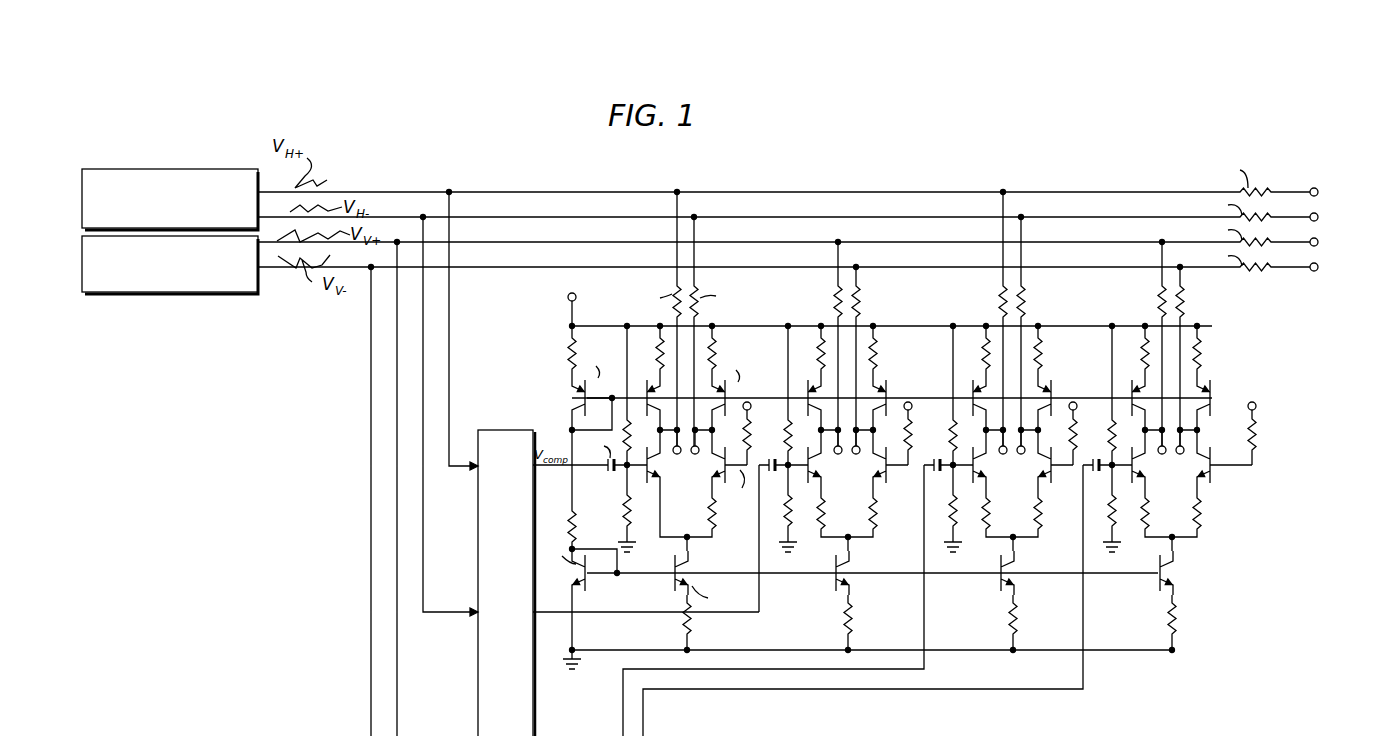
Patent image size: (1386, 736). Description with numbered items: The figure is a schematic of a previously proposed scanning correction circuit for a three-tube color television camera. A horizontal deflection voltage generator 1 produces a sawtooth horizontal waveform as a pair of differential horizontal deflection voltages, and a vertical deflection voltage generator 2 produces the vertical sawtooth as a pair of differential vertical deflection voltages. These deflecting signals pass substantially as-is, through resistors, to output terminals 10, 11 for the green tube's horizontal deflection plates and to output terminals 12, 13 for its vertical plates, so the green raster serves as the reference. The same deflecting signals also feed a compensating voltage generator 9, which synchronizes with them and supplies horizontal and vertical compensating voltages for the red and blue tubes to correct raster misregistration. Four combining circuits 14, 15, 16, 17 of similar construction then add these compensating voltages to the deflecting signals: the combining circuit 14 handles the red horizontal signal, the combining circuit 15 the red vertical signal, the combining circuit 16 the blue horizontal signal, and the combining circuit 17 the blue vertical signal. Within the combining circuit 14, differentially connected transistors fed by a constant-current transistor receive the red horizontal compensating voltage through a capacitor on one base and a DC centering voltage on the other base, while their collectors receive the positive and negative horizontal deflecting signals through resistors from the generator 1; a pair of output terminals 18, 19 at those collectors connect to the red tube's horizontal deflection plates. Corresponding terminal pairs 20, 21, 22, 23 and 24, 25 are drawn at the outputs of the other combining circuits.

The horizontal deflection voltage generator 1 is at (82, 202).
The vertical deflection voltage generator 2 is at (82, 270).
The compensating voltage generator 9 is at (514, 430).
The output terminal 10 is at (1318, 192).
The output terminal 11 is at (1318, 217).
The output terminal 12 is at (1318, 242).
The output terminal 13 is at (1318, 267).
The combining circuit 14 is at (857, 430).
The combining circuit 15 is at (845, 446).
The combining circuit 16 is at (1002, 421).
The combining circuit 17 is at (1169, 446).
The output terminal 18 is at (677, 454).
The output terminal 19 is at (695, 454).
The terminal 20 is at (838, 454).
The terminal 21 is at (856, 454).
The terminal 22 is at (1003, 454).
The terminal 23 is at (1021, 454).
The terminal 24 is at (1162, 454).
The terminal 25 is at (1180, 454).